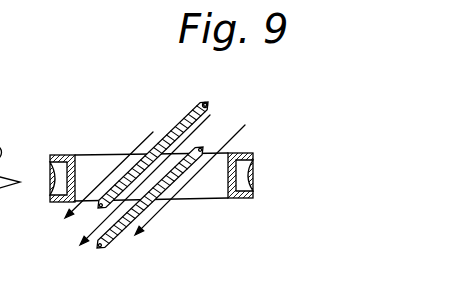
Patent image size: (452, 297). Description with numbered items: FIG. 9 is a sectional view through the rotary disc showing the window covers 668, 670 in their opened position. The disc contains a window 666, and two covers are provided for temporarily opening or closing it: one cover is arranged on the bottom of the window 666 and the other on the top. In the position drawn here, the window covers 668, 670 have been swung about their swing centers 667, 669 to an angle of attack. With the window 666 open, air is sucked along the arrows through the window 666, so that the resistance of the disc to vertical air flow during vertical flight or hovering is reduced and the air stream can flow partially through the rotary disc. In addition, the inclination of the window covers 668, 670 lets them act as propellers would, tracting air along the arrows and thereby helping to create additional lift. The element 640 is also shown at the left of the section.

The housing wall section 640 is at (58, 155).
The window 666 is at (216, 177).
The swing center 667 is at (152, 154).
The window cover 668 is at (210, 100).
The swing center 669 is at (166, 202).
The window cover 670 is at (204, 146).